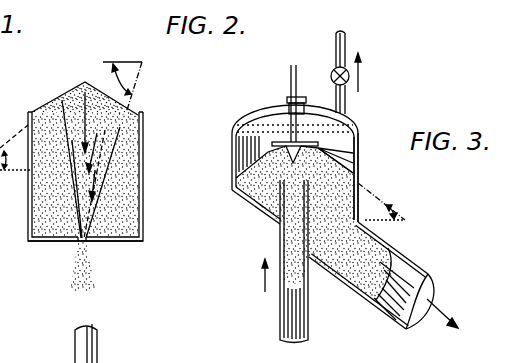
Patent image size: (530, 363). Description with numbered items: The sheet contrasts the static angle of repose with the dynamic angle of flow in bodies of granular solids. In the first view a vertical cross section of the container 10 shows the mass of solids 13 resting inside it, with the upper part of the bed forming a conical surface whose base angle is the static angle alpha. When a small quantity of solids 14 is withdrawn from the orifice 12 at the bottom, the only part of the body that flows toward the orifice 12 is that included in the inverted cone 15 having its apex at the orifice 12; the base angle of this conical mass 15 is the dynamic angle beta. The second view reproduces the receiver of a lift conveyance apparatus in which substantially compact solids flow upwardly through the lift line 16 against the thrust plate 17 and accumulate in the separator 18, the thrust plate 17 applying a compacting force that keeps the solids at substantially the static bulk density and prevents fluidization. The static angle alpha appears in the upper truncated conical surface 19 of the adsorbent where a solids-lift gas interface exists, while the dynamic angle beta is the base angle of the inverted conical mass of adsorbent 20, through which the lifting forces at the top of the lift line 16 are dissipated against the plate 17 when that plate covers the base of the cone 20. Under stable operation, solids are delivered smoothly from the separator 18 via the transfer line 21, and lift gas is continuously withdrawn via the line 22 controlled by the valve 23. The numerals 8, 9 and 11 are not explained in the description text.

In FIG. 3, the container wall 8 is at (233, 171).
In FIG. 3, the distributor plate 9 is at (307, 143).
In FIG. 2, the container 10 is at (144, 151).
In FIG. 2, the container bottom 11 is at (123, 246).
In FIG. 2, the orifice 12 is at (78, 242).
In FIG. 2, the mass of solids 13 is at (110, 218).
In FIG. 2, the small quantity of solids 14 is at (72, 270).
In FIG. 2, the inverted cone 15 is at (70, 117).
In FIG. 3, the lift line 16 is at (280, 316).
In FIG. 3, the thrust plate 17 is at (282, 145).
In FIG. 3, the separator 18 is at (360, 178).
In FIG. 3, the upper truncated conical surface 19 is at (356, 138).
In FIG. 3, the inverted conical mass of adsorbent 20 is at (258, 210).
In FIG. 3, the transfer line 21 is at (404, 278).
In FIG. 3, the line 22 is at (347, 110).
In FIG. 3, the valve 23 is at (332, 74).